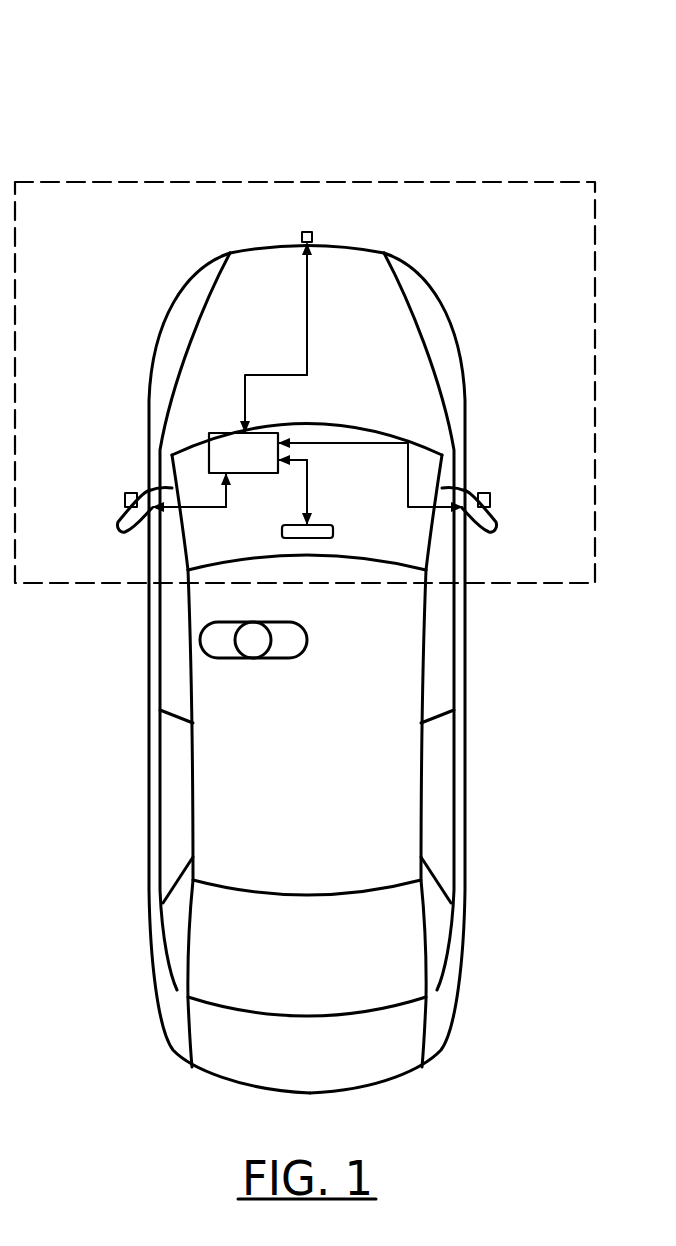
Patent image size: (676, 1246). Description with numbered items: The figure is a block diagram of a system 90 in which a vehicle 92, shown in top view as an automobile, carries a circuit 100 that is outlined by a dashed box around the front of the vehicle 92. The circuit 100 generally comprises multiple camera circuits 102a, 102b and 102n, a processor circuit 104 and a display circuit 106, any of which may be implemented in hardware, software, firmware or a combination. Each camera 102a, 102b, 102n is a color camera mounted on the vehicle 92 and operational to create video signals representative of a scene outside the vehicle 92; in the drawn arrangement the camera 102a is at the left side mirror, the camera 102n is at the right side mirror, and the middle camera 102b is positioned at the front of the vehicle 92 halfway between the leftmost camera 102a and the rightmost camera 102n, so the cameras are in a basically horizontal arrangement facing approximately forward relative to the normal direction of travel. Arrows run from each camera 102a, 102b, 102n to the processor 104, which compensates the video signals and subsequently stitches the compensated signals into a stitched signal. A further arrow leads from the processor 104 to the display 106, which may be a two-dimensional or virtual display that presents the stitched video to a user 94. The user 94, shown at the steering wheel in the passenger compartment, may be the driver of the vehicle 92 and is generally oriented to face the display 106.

The system 90 is at (237, 40).
The circuit 100 is at (110, 182).
The vehicle 92 is at (148, 755).
The user 94 is at (273, 658).
The camera 102a is at (136, 494).
The camera 102b is at (303, 232).
The camera 102n is at (485, 494).
The processor circuit 104 is at (253, 473).
The display circuit 106 is at (322, 525).